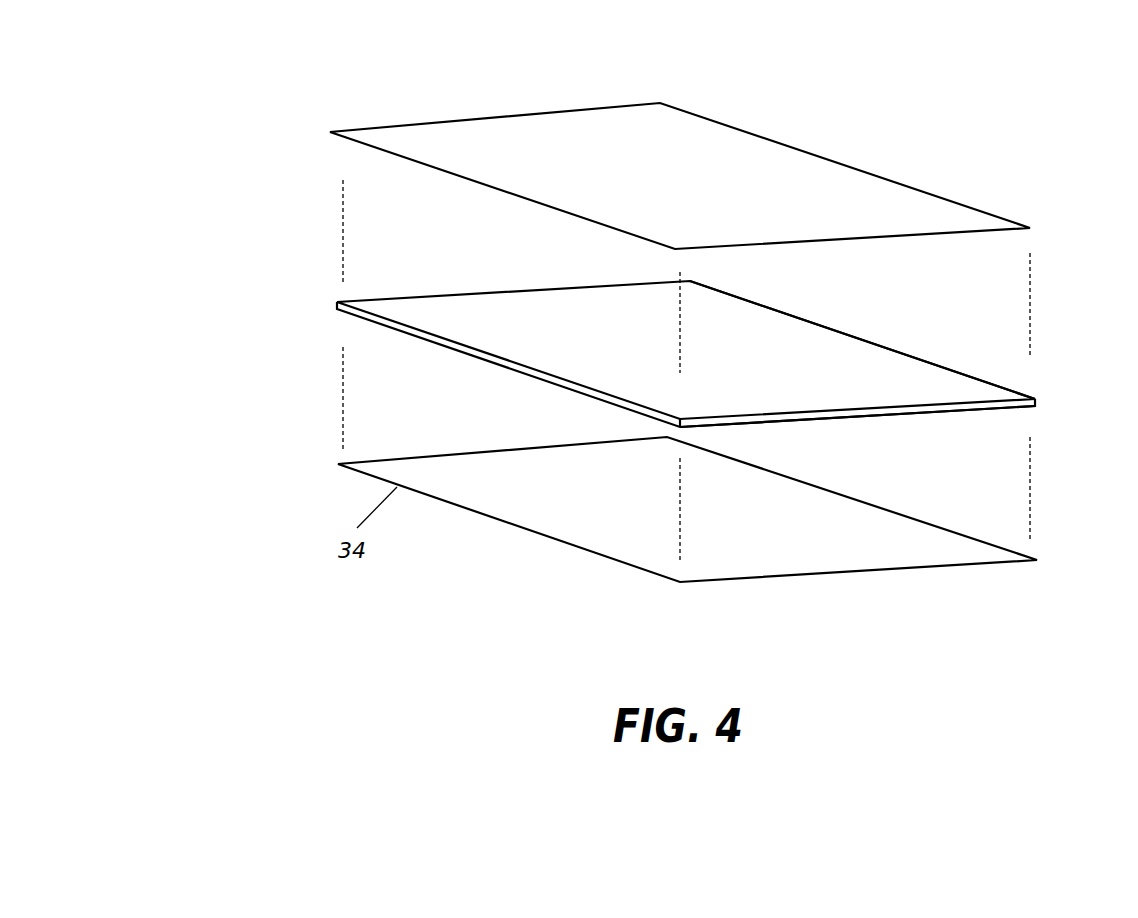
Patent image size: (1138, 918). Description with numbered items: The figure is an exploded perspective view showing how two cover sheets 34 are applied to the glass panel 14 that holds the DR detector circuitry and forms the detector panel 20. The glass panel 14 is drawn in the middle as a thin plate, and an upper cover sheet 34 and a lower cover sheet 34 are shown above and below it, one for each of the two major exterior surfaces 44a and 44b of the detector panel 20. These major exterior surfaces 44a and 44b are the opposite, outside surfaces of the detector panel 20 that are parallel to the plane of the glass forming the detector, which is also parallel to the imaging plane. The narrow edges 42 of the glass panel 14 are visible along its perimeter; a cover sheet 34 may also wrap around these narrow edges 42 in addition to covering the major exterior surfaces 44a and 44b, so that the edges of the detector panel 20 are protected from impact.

The cover sheet 34 is at (413, 123).
The glass panel 14 is at (673, 374).
The narrow edges 42 is at (1037, 400).
The major exterior surface 44a is at (912, 373).
The major exterior surface 44b is at (848, 417).
The detector panel 20 is at (1096, 487).